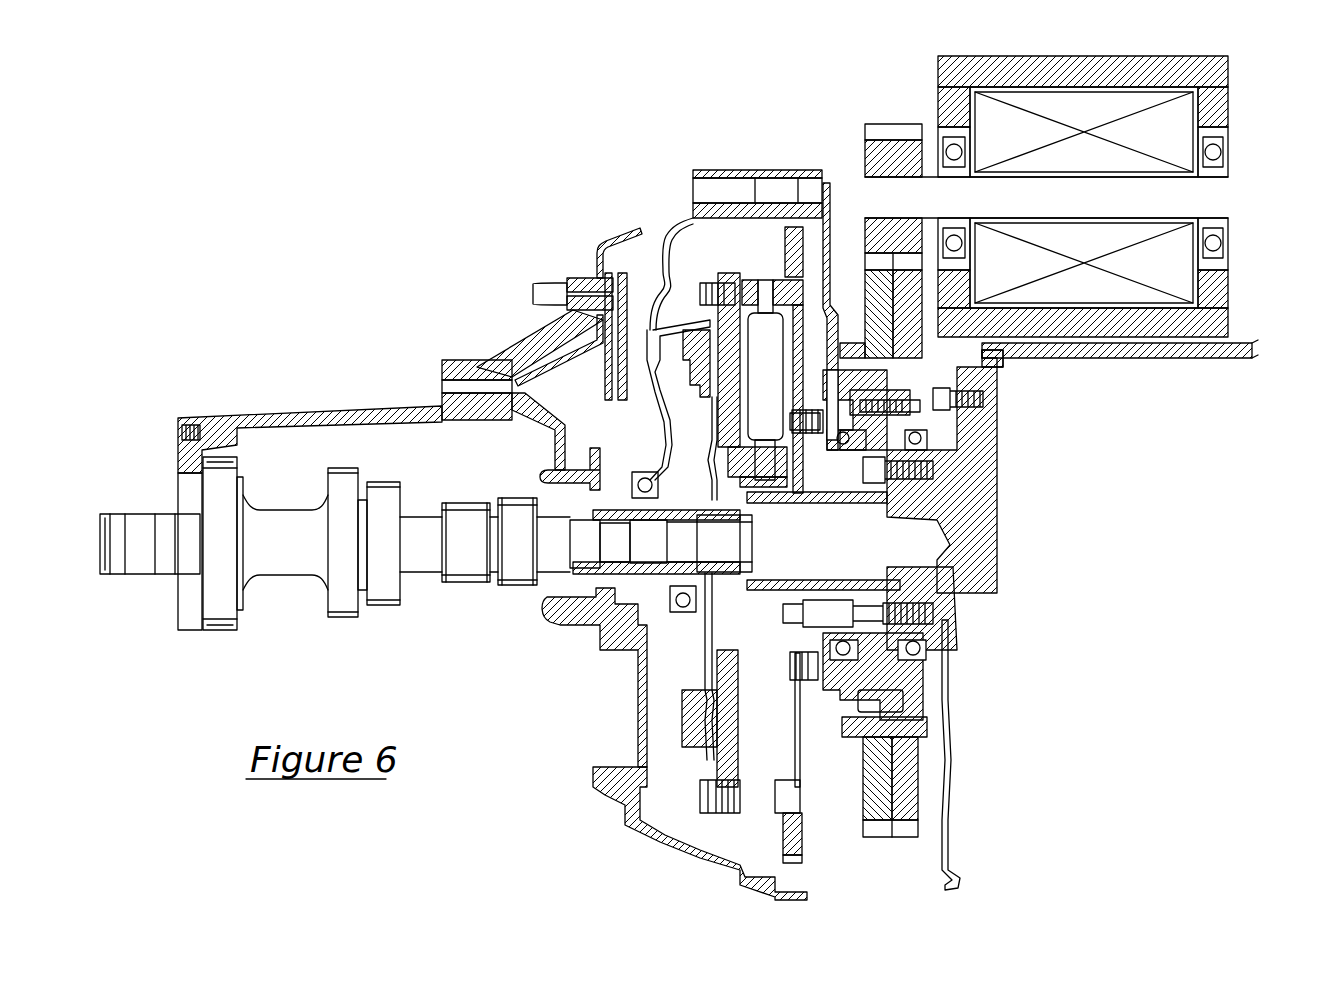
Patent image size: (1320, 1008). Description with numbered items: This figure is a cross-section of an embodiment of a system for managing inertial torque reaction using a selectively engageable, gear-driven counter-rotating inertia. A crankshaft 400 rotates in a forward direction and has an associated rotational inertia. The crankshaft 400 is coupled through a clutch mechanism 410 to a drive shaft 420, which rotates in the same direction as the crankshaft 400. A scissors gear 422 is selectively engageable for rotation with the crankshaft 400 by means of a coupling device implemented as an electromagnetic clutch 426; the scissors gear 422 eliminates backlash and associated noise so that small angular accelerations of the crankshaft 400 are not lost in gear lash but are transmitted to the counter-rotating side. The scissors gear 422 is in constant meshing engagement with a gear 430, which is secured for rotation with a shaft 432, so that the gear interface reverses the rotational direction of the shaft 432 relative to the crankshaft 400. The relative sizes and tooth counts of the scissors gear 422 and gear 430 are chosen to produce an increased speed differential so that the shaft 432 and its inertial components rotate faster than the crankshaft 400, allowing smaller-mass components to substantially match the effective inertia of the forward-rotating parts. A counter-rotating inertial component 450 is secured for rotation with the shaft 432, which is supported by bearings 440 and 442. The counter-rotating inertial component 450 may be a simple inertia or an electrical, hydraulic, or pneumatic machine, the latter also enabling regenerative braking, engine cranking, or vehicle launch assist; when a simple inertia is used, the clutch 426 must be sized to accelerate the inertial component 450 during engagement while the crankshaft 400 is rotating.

The crankshaft 400 is at (975, 548).
The clutch mechanism 410 is at (694, 258).
The drive shaft 420 is at (292, 552).
The scissors gear 422 is at (905, 760).
The electromagnetic clutch 426 is at (870, 430).
The gear 430 is at (874, 150).
The shaft 432 is at (875, 195).
The bearing 440 is at (945, 140).
The bearing 442 is at (1232, 262).
The counter-rotating inertial component 450 is at (1165, 280).